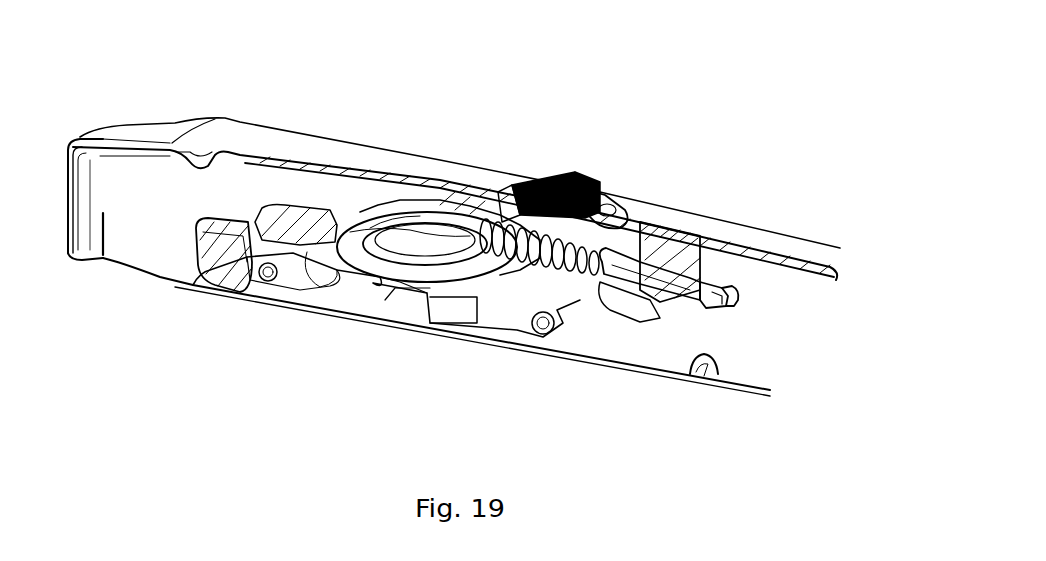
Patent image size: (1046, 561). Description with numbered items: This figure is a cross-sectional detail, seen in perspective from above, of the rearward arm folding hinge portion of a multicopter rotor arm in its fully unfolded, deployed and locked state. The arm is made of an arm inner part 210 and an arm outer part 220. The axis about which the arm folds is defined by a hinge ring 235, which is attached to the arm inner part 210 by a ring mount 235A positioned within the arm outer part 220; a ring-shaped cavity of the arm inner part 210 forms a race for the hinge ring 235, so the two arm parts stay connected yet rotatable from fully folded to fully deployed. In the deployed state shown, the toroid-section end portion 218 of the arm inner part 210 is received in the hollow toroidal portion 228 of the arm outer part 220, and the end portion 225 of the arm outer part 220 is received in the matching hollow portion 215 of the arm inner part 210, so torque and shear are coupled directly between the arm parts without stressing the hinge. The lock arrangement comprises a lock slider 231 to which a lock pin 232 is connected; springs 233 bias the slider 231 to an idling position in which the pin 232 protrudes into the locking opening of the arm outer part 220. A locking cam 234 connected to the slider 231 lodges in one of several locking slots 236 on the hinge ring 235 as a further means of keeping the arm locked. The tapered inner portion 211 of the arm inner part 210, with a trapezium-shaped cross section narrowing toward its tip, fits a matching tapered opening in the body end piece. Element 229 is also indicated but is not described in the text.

The arm inner part 210 is at (275, 148).
The inner portion of the arm inner part 211 is at (86, 255).
The portion of the arm inner part 215 is at (200, 233).
The end portion of the arm inner part 218 is at (696, 282).
The arm outer part 220 is at (706, 372).
The end portion of the arm outer part 225 is at (225, 232).
The portion of the arm outer part 228 is at (680, 276).
The pin 229 is at (732, 290).
The lock slider 231 is at (566, 186).
The lock pin 232 is at (707, 297).
The spring 233 is at (517, 238).
The locking cam 234 is at (485, 245).
The hinge ring 235 is at (412, 270).
The ring mount 235A is at (456, 312).
The locking slot 236 is at (490, 250).